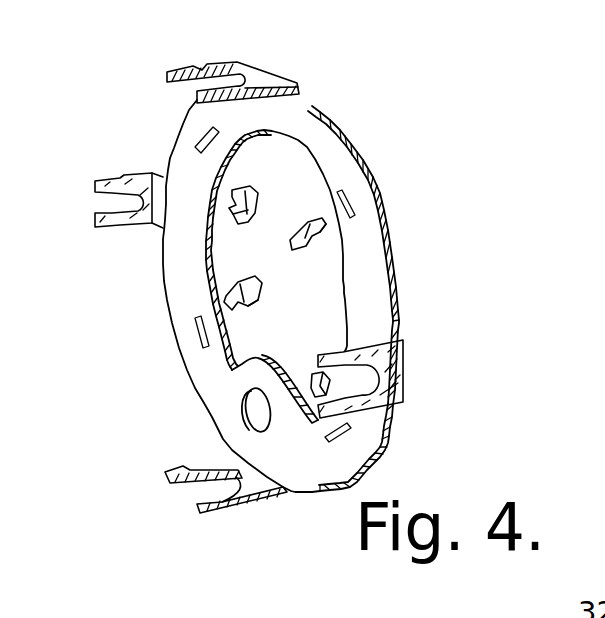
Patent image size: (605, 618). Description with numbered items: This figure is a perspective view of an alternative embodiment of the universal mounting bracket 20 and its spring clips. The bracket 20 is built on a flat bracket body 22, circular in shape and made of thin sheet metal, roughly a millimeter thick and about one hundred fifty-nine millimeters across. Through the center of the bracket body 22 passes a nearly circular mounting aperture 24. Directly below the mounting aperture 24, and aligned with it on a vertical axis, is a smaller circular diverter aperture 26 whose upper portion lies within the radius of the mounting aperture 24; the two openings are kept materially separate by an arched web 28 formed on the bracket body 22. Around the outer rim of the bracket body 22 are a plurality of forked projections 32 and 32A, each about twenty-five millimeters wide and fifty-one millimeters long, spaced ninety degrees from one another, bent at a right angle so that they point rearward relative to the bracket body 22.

The universal mounting bracket 20 is at (419, 217).
The bracket body 22 is at (187, 275).
The mounting aperture 24 is at (327, 298).
The diverter aperture 26 is at (258, 410).
The arched web 28 is at (260, 372).
The forked projection 32 is at (247, 70).
The forked projection 32A is at (257, 487).